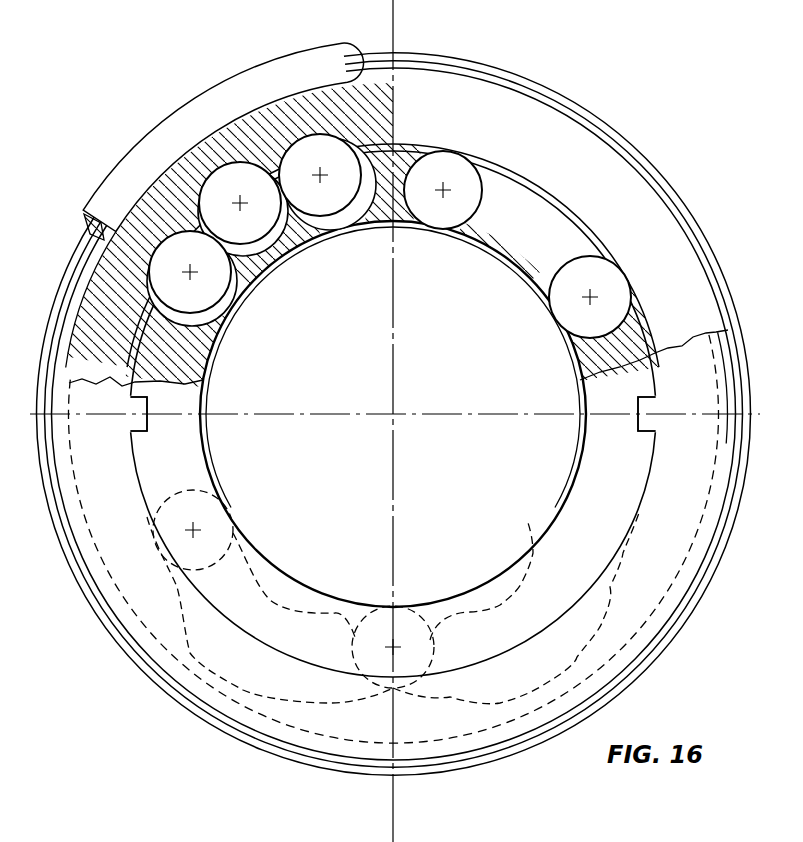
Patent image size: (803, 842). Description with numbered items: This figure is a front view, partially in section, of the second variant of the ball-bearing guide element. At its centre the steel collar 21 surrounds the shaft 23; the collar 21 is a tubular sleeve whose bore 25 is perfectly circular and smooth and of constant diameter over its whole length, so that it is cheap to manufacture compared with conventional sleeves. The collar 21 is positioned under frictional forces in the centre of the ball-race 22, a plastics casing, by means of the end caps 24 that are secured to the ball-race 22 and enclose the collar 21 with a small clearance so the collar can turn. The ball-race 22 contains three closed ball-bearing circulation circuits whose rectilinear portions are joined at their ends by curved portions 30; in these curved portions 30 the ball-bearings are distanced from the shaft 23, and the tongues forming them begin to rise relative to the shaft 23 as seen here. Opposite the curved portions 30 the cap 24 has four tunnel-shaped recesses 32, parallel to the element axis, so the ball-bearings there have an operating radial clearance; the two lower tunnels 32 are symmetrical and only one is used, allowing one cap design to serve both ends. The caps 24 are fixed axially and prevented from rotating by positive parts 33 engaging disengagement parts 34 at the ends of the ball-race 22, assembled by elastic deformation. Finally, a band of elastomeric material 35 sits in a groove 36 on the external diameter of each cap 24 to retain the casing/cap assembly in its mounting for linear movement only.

The steel collar 21 is at (443, 56).
The ball-race 22 is at (393, 414).
The shaft 23 is at (393, 414).
The end cap 24 is at (595, 138).
The bore 25 is at (483, 150).
The curved portion 30 is at (280, 247).
The tunnel-shaped recess 32 is at (223, 140).
The positive part 33 is at (148, 428).
The disengagement part 34 is at (393, 414).
The band of elastomeric material 35 is at (207, 102).
The groove 36 is at (88, 247).